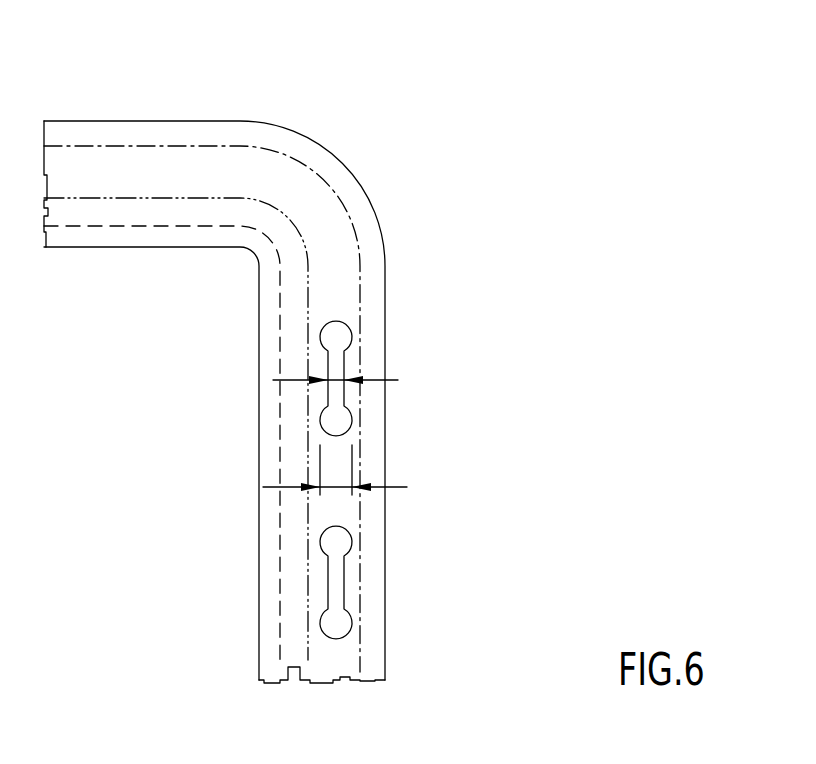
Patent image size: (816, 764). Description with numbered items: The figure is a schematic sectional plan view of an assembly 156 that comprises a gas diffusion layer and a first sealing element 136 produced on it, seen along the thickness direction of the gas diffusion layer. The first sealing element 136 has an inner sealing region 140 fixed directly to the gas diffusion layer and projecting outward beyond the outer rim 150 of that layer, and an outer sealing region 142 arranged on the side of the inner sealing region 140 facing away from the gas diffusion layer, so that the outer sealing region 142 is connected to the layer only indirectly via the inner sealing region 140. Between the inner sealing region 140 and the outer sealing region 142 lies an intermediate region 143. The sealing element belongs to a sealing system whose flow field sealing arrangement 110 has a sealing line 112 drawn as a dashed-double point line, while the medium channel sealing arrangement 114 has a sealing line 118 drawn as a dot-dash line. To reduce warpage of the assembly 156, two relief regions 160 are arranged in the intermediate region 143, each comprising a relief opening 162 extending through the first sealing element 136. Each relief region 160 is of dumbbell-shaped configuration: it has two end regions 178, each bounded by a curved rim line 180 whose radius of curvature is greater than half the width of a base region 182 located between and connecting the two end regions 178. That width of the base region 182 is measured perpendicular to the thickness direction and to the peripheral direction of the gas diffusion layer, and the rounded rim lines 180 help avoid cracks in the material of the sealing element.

The flow field sealing arrangement 110 is at (138, 199).
The sealing line 112 is at (93, 198).
The medium channel sealing arrangement 114 is at (155, 144).
The sealing line 118 is at (243, 121).
The first sealing element 136 is at (352, 212).
The inner sealing region 140 is at (238, 213).
The outer sealing region 142 is at (337, 170).
The intermediate region 143 is at (342, 257).
The outer rim 150 is at (110, 167).
The assembly 156 is at (320, 133).
The relief region 160 is at (353, 365).
The relief opening 162 is at (345, 388).
The end region 178 is at (359, 323).
The curved rim line 180 is at (348, 323).
The base region 182 is at (327, 390).